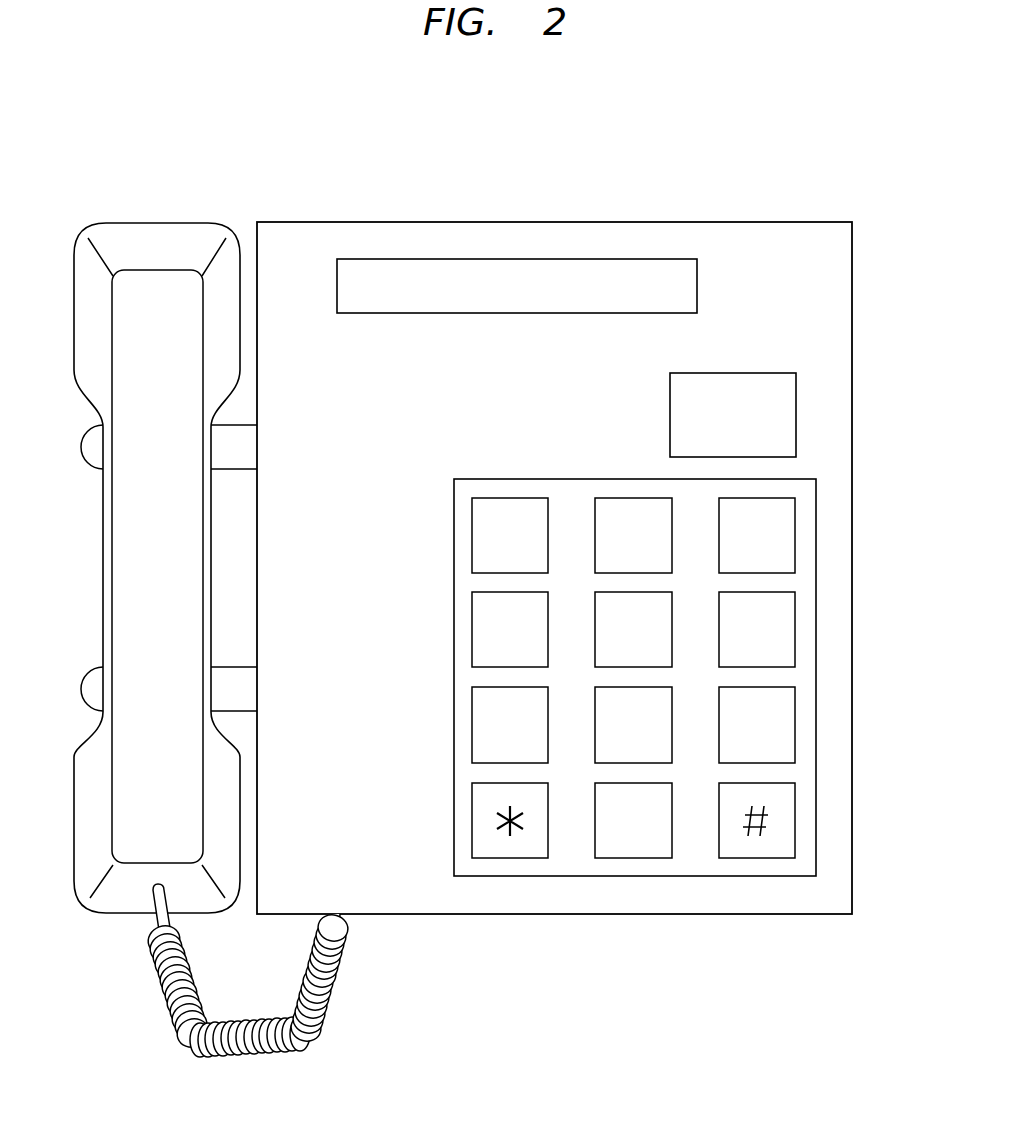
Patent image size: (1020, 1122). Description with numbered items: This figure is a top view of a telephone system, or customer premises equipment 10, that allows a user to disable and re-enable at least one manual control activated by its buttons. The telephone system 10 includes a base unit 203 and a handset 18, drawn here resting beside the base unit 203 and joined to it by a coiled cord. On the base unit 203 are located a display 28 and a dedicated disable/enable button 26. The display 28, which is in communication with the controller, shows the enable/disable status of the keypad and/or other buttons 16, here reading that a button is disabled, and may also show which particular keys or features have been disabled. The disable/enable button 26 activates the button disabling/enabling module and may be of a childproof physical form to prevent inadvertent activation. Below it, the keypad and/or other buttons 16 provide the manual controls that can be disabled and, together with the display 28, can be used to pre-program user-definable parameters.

The customer premises equipment 10 is at (861, 180).
The handset 18 is at (153, 222).
The display 28 is at (515, 259).
The base unit 203 is at (853, 296).
The disable/enable button 26 is at (796, 412).
The keypad and/or other buttons 16 is at (816, 680).